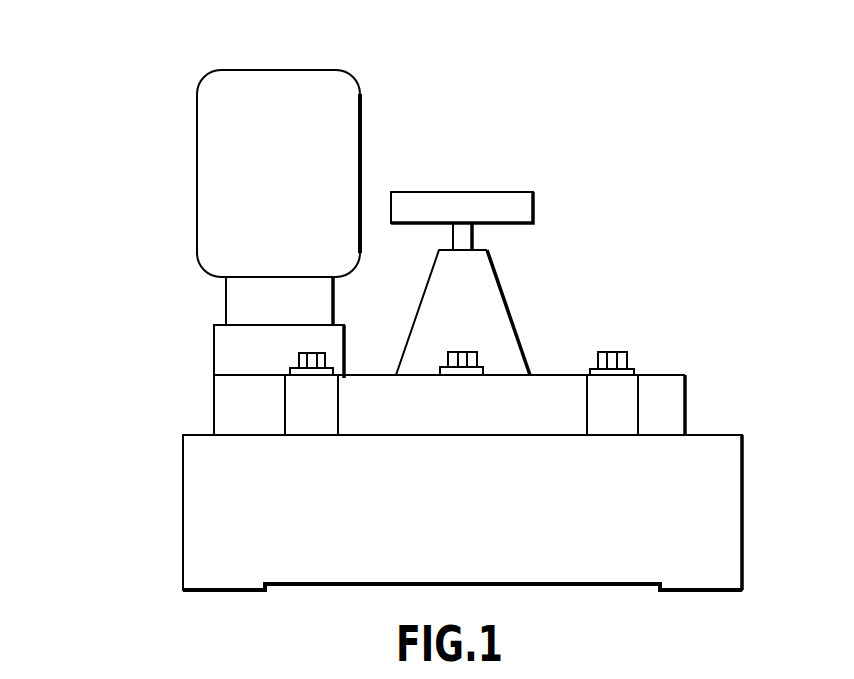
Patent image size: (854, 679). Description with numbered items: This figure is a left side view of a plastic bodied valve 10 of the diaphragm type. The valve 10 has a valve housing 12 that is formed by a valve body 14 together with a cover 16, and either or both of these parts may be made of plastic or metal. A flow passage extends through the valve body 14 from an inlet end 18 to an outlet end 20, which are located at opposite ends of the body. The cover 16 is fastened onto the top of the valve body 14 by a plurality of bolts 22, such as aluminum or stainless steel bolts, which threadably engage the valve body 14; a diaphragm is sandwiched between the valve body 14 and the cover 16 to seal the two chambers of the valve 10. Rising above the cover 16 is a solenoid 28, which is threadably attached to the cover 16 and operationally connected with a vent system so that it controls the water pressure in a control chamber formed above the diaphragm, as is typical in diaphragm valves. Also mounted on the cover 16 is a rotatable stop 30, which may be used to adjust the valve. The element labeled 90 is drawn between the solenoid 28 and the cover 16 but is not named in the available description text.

The valve 10 is at (115, 168).
The valve housing 12 is at (110, 418).
The valve body 14 is at (725, 577).
The cover 16 is at (678, 383).
The inlet end 18 is at (775, 515).
The outlet end 20 is at (155, 523).
The bolts 22 is at (300, 363).
The solenoid 28 is at (263, 75).
The rotatable stop 30 is at (472, 192).
The neck 90 is at (232, 308).